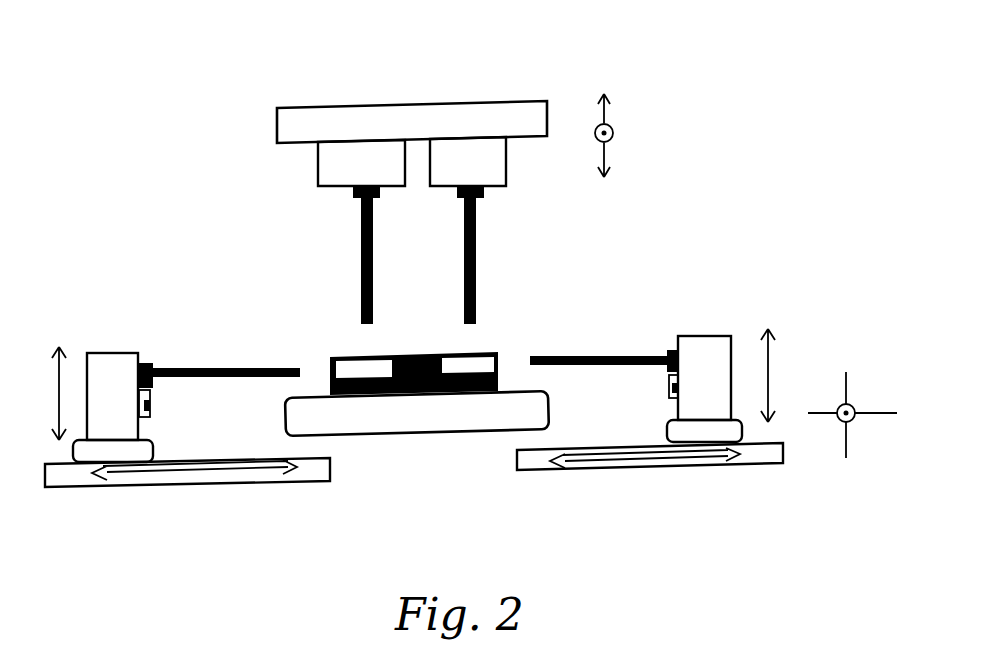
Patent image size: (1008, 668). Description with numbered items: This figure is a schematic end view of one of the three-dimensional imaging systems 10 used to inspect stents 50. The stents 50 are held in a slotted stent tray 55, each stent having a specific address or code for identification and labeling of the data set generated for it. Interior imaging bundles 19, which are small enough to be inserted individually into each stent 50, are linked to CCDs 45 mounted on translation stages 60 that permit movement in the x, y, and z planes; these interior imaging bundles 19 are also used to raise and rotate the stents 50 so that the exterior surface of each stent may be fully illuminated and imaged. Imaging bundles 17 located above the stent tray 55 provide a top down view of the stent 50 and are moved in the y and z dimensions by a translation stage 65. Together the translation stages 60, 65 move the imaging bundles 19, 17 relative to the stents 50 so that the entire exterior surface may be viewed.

The three-dimensional imaging system 10 is at (404, 69).
The imaging bundles 17 is at (467, 310).
The interior imaging bundles 19 is at (185, 367).
The CCDs 45 is at (720, 348).
The stent 50 is at (497, 352).
The stent tray 55 is at (404, 393).
The translation stage 60 is at (165, 486).
The translation stage 65 is at (517, 102).